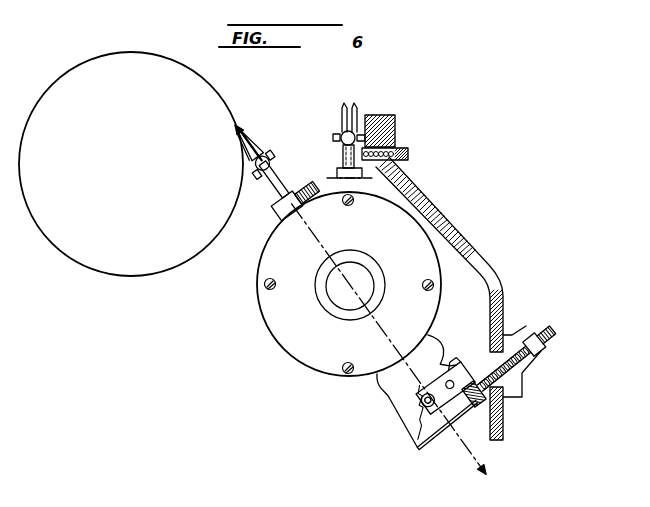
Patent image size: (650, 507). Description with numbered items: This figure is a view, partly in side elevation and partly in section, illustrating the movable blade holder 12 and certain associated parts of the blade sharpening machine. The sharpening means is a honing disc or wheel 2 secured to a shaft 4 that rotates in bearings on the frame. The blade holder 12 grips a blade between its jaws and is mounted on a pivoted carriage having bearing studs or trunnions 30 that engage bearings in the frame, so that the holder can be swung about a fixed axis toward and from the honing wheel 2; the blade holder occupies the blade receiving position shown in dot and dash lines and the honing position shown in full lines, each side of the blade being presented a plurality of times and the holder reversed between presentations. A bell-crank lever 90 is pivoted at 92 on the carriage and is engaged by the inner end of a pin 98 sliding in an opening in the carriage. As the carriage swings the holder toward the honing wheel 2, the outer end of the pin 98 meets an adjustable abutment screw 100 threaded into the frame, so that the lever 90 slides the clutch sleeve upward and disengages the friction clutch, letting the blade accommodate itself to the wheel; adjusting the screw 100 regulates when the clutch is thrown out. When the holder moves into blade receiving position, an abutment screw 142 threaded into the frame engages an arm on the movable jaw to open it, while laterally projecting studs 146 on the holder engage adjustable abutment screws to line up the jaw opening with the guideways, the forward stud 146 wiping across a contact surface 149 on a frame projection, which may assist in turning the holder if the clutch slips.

The honing disc or wheel 2 is at (145, 277).
The shaft 4 is at (364, 297).
The movable blade holder 12 is at (247, 143).
The bearing studs or trunnions 30 is at (337, 298).
The bell-crank lever 90 is at (428, 400).
The pivot 92 is at (443, 385).
The pin 98 is at (474, 394).
The adjustable abutment screw 100 is at (552, 330).
The abutment screw 142 is at (410, 157).
The laterally projecting studs 146 is at (263, 164).
The contact surface 149 is at (362, 128).